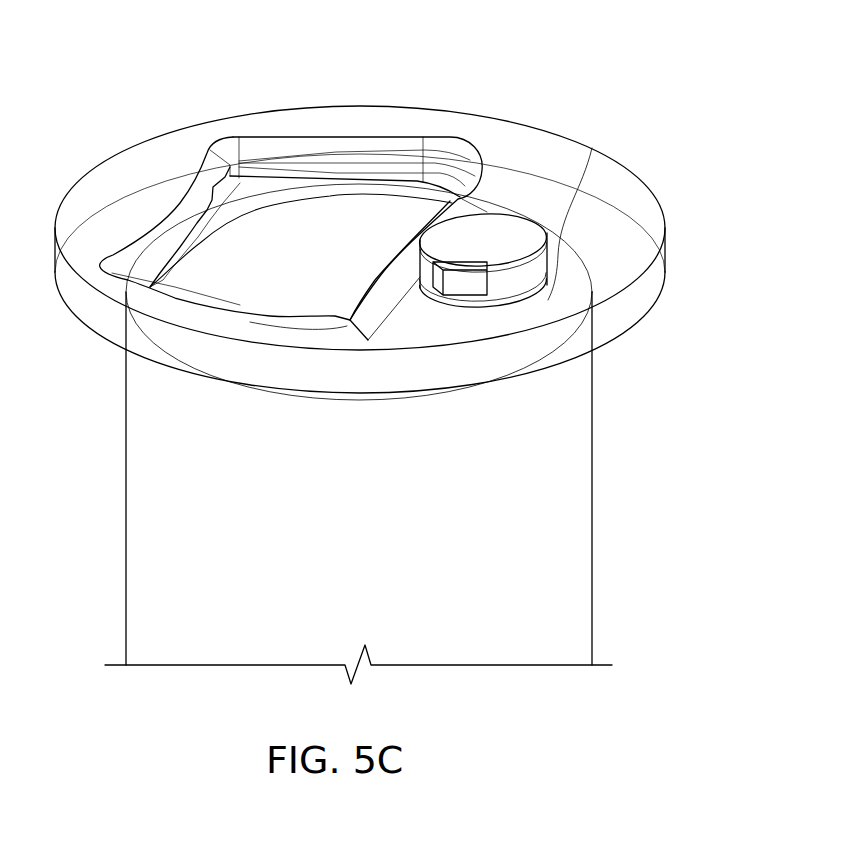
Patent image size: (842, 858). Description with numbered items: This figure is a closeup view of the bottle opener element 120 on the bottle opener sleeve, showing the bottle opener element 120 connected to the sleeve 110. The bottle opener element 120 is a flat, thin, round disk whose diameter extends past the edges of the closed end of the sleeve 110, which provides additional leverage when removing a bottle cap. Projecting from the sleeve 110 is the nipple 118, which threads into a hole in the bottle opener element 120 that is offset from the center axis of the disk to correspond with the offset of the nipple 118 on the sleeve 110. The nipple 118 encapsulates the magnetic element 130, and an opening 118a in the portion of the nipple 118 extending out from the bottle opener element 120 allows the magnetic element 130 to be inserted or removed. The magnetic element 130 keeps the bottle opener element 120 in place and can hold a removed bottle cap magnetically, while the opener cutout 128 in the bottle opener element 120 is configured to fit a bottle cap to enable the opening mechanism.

The sleeve 110 is at (593, 535).
The nipple 118 is at (587, 256).
The opening 118a is at (487, 283).
The bottle opener element 120 is at (667, 252).
The opener cutout 128 is at (278, 137).
The magnetic element 130 is at (457, 280).